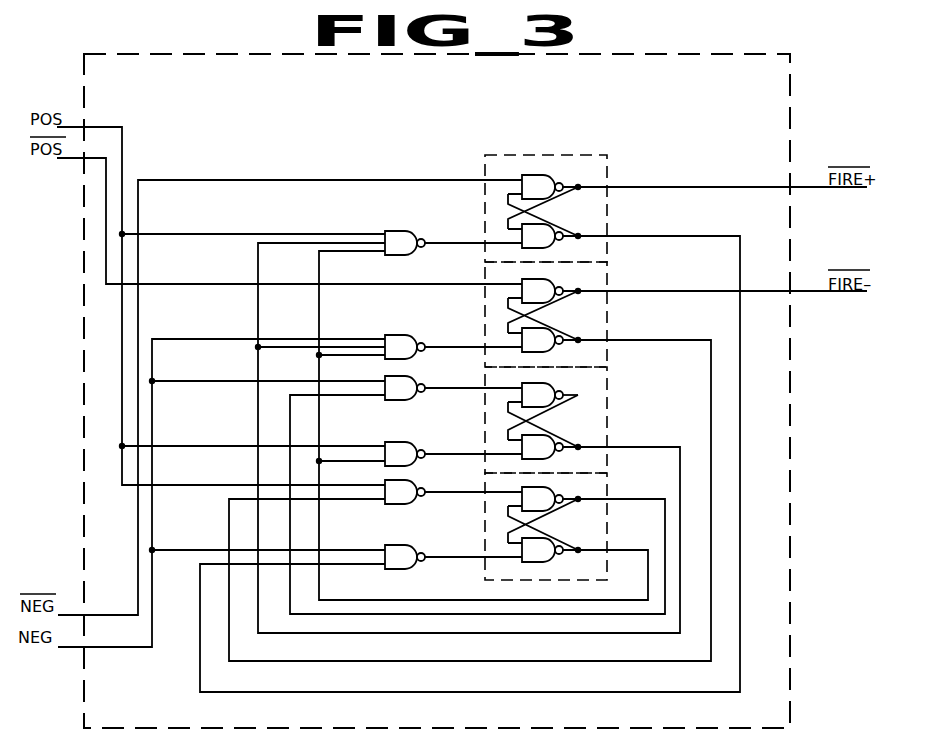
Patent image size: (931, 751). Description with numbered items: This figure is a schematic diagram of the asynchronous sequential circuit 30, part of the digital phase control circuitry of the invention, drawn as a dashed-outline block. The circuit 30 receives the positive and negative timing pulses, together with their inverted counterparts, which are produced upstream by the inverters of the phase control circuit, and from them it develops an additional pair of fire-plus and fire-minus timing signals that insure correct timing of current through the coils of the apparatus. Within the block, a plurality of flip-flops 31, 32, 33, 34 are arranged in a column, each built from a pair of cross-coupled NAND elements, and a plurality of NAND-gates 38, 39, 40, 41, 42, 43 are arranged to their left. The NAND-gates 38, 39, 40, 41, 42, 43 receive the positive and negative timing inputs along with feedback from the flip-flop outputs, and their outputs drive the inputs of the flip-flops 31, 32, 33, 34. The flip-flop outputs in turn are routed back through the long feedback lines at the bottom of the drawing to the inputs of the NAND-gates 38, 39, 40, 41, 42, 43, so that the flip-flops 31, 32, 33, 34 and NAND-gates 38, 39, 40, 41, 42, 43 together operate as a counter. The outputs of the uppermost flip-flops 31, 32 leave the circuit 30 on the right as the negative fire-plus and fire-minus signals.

The asynchronous sequential circuit 30 is at (790, 104).
The flip-flop 31 is at (607, 160).
The flip-flop 32 is at (607, 268).
The flip-flop 33 is at (607, 392).
The flip-flop 34 is at (607, 525).
The NAND-gate 38 is at (410, 219).
The NAND-gate 39 is at (401, 335).
The NAND-gate 40 is at (405, 400).
The NAND-gate 41 is at (393, 443).
The NAND-gate 42 is at (404, 503).
The NAND-gate 43 is at (393, 546).